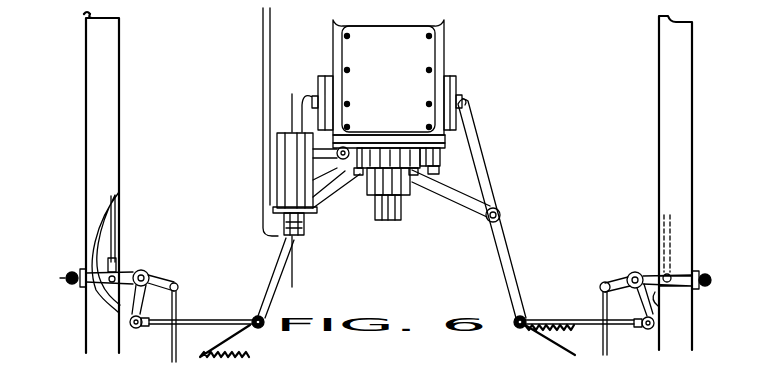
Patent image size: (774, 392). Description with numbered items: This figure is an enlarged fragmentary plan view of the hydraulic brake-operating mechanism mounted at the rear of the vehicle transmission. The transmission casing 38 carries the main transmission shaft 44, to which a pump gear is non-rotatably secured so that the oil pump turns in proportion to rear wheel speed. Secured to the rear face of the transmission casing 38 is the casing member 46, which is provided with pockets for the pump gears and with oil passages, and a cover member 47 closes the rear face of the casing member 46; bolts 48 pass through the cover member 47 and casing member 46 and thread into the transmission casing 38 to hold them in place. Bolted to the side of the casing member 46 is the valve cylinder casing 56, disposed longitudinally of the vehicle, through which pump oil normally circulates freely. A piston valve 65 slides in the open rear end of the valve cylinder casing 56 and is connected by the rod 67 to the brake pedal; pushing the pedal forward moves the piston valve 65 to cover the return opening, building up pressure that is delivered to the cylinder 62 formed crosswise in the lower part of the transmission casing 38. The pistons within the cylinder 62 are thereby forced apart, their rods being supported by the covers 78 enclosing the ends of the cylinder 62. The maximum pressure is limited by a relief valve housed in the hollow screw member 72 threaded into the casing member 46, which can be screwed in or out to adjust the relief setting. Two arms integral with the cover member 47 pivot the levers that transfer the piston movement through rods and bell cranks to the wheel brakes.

The rod 67 is at (263, 50).
The transmission casing 38 is at (445, 41).
The cylinder 62 is at (328, 78).
The cover 78 is at (456, 84).
The hollow screw member 72 is at (347, 148).
The casing member 46 is at (441, 147).
The cover member 47 is at (440, 160).
The bolt 48 is at (434, 170).
The main transmission shaft 44 is at (392, 222).
The valve cylinder casing 56 is at (277, 133).
The piston valve 65 is at (305, 232).